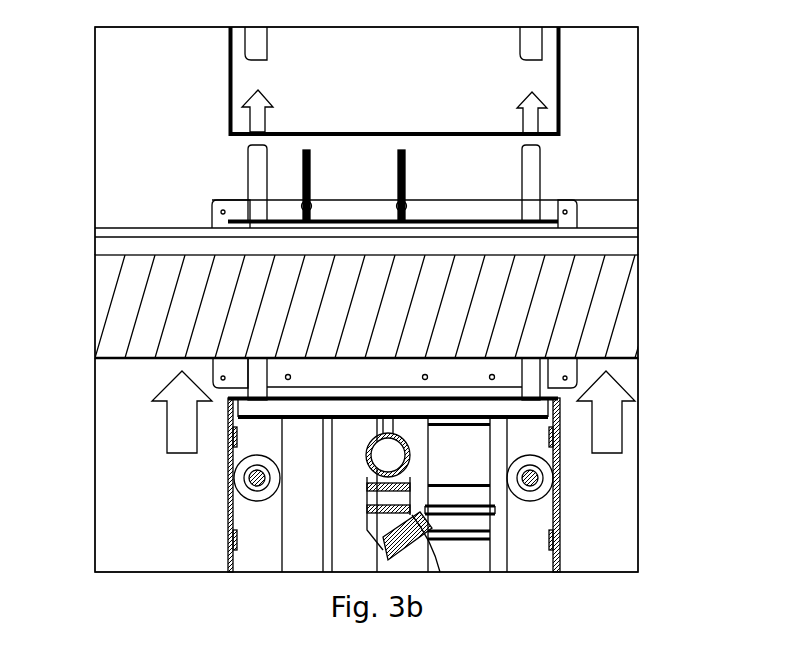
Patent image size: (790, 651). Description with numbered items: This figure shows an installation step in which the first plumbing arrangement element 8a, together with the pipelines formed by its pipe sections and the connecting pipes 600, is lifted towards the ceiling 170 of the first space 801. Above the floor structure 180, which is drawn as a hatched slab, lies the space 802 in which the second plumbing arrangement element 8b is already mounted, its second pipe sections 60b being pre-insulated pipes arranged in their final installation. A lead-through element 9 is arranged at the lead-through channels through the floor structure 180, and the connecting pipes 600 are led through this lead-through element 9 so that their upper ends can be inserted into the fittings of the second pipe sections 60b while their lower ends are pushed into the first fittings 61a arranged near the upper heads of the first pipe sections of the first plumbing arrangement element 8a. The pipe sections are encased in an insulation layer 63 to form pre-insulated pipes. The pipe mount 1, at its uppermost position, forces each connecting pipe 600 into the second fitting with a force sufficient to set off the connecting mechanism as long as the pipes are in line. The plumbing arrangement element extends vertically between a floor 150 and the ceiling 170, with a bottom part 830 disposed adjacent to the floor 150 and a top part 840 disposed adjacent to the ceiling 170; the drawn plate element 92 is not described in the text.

The pipe mount 1 is at (233, 550).
The first plumbing arrangement element 8a is at (211, 520).
The second plumbing arrangement element 8b is at (195, 55).
The lead-through element 9 is at (578, 225).
The second pipe sections 60b is at (245, 60).
The first fittings 61a is at (250, 478).
The insulation layer 63 is at (243, 450).
The mounting plate 92 is at (548, 368).
The floor 150 is at (157, 226).
The ceiling 170 is at (148, 360).
The floor structure 180 is at (366, 317).
The connecting pipes 600 is at (255, 178).
The first space 801 is at (580, 565).
The space above 802 is at (141, 151).
The bottom part 830 is at (575, 127).
The top part 840 is at (575, 430).